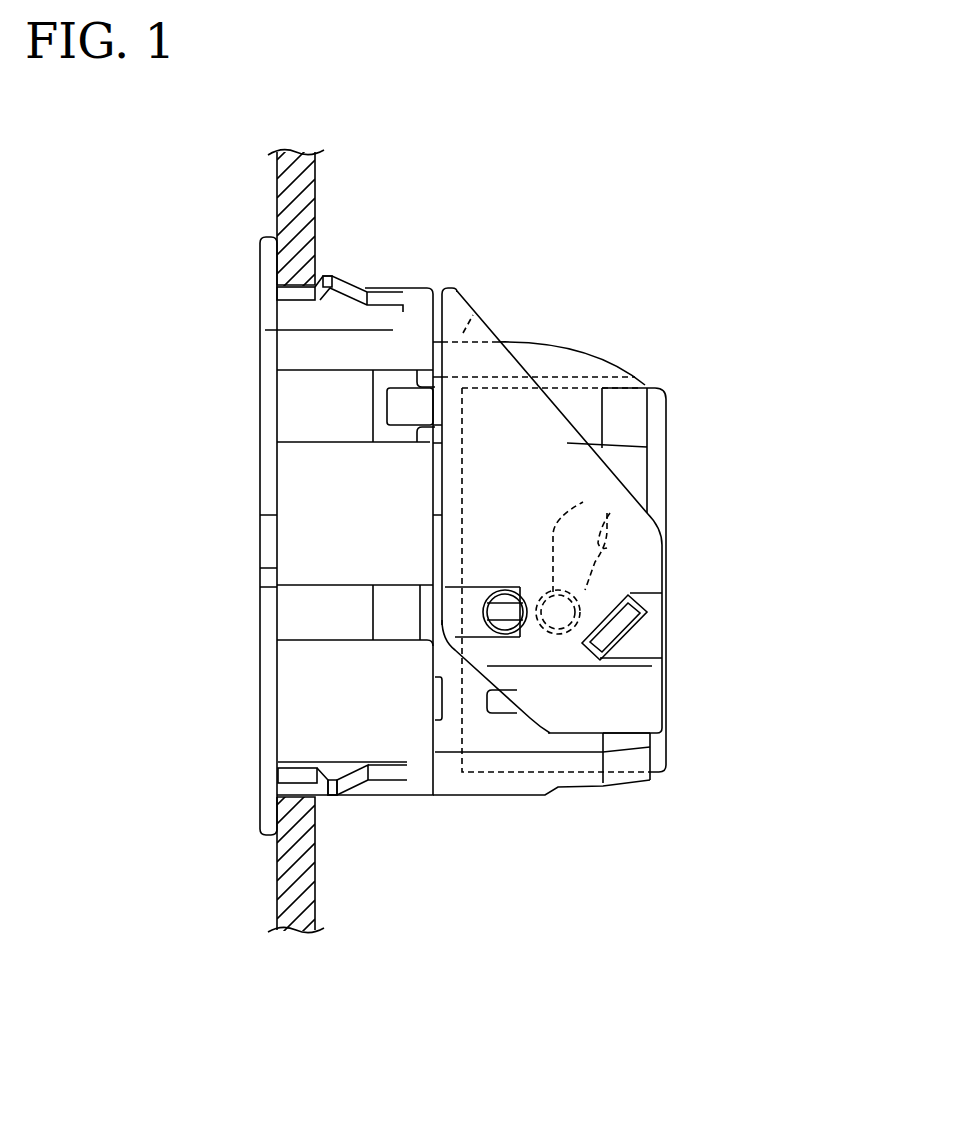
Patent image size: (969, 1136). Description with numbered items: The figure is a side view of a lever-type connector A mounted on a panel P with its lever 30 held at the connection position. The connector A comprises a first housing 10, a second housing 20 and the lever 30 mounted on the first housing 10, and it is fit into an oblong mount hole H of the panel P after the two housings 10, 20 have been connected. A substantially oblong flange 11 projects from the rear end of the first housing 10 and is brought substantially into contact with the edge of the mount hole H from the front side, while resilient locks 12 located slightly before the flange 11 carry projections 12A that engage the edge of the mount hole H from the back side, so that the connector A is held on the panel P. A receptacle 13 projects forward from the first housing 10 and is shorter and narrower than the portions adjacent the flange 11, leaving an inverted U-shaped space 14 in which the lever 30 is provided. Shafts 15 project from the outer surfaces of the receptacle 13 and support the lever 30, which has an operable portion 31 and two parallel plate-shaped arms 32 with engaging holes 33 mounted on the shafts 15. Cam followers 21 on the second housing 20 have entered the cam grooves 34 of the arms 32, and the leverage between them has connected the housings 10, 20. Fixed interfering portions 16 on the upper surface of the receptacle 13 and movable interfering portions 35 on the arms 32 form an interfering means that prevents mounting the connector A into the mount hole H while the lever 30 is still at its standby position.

The panel P is at (295, 165).
The mount hole H is at (290, 297).
The lever-type connector A is at (618, 212).
The first housing 10 is at (370, 720).
The flange 11 is at (266, 825).
The resilient locks 12 is at (377, 300).
The projections 12A is at (326, 282).
The receptacle 13 is at (495, 728).
The space 14 is at (447, 700).
The shafts 15 is at (504, 625).
The fixed interfering portions 16 is at (549, 358).
The second housing 20 is at (658, 408).
The cam followers 21 is at (557, 587).
The lever 30 is at (506, 298).
The operable portion 31 is at (452, 288).
The arms 32 is at (535, 455).
The engaging holes 33 is at (583, 502).
The cam grooves 34 is at (610, 513).
The movable interfering portions 35 is at (652, 707).